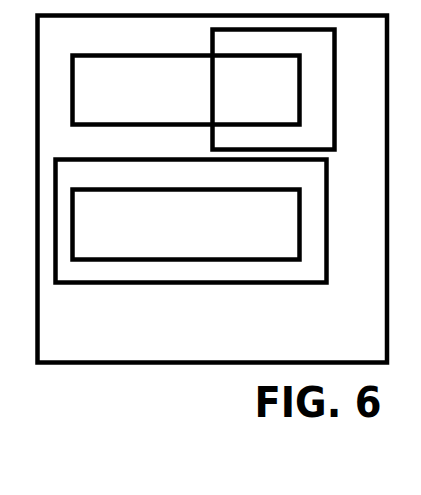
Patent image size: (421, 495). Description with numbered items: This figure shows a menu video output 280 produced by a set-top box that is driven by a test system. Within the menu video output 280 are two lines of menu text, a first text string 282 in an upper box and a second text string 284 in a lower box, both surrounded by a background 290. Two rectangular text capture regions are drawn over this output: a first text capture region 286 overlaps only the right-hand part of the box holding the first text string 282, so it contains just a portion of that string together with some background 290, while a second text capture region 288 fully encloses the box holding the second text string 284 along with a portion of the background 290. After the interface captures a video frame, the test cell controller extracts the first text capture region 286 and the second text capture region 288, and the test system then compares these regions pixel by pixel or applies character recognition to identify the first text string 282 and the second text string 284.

The menu video output 280 is at (203, 376).
The first text string 282 is at (186, 90).
The second text string 284 is at (186, 225).
The first text capture region 286 is at (338, 113).
The second text capture region 288 is at (125, 284).
The background 290 is at (352, 304).